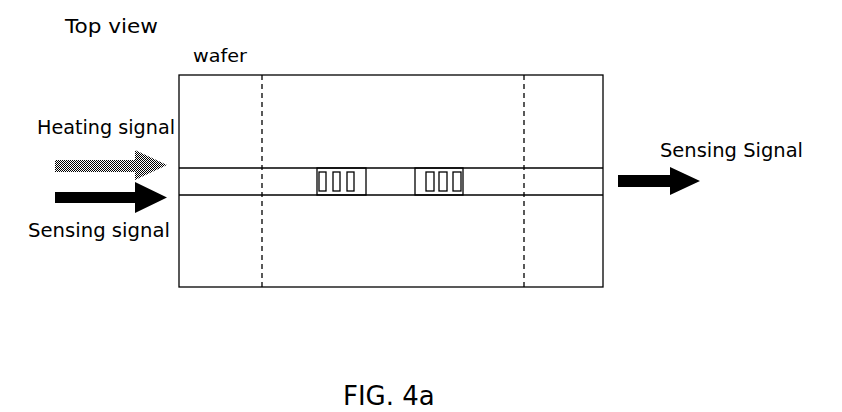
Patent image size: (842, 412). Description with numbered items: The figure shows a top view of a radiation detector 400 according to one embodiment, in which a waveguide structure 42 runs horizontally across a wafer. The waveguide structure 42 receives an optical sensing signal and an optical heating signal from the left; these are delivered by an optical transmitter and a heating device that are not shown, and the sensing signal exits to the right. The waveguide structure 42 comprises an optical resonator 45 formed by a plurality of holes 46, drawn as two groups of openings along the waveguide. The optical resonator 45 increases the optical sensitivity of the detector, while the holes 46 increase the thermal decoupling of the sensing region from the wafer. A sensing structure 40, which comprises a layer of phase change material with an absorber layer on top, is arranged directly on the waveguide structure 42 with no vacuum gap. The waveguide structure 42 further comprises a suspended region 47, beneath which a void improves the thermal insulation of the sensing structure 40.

The radiation detector 400 is at (490, 215).
The sensing structure 40 is at (441, 106).
The waveguide structure 42 is at (553, 195).
The optical resonator 45 is at (426, 148).
The holes 46 is at (322, 195).
The suspended region 47 is at (447, 274).